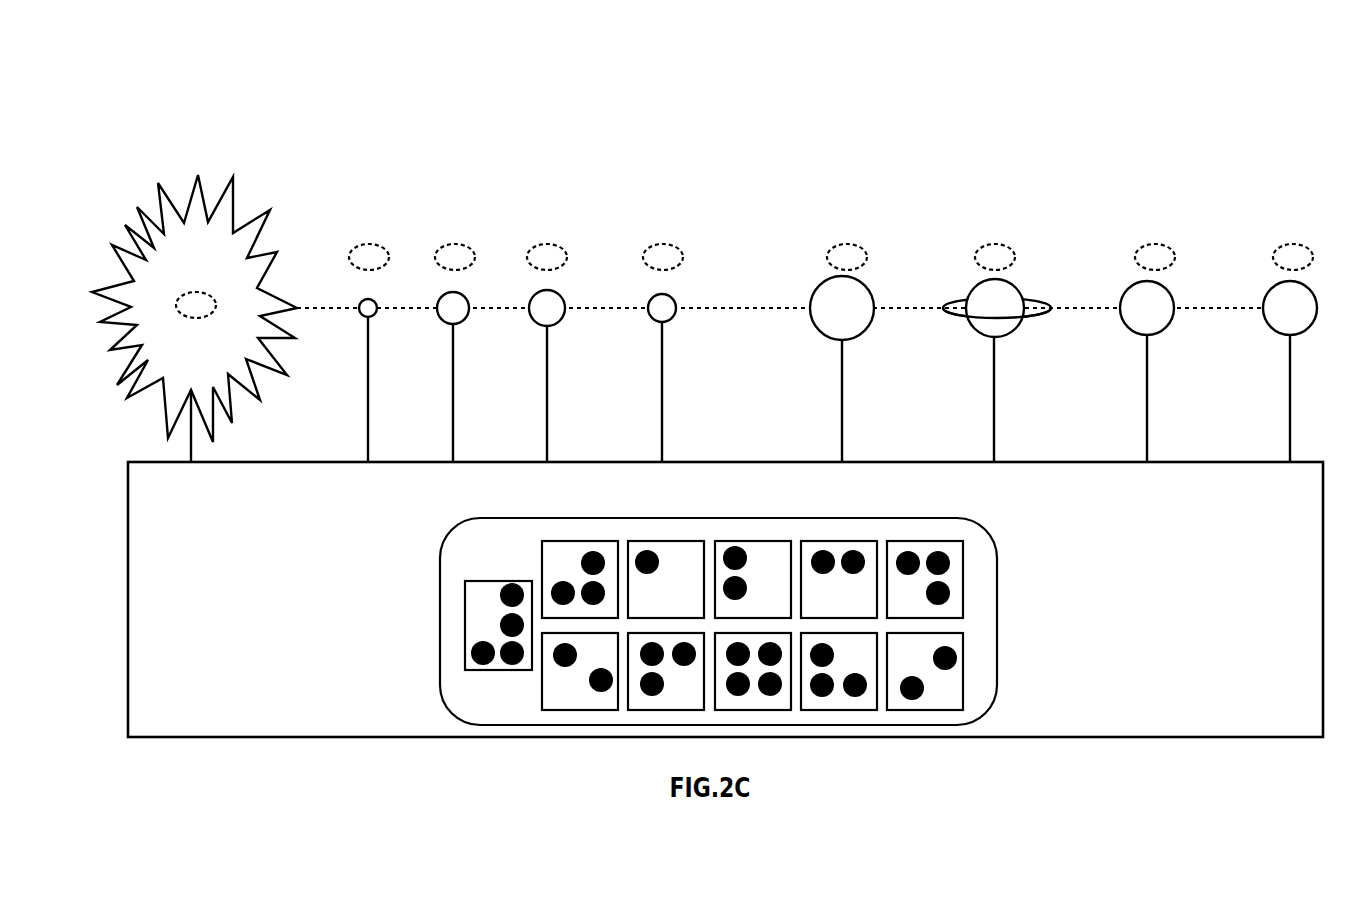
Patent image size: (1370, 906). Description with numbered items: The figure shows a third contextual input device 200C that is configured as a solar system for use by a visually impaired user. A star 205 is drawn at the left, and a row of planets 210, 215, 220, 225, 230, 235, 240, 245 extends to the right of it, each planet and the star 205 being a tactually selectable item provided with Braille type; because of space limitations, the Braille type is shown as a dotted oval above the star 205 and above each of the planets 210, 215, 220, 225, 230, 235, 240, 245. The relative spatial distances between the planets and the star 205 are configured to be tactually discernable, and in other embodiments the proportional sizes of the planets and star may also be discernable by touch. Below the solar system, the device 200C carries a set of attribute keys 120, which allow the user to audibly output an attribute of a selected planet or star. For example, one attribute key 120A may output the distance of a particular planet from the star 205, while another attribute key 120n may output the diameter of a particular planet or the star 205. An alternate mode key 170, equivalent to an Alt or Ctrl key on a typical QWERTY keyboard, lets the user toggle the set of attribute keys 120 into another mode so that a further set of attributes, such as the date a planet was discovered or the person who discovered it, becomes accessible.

The star 205 is at (204, 292).
The planet 210 is at (373, 244).
The planet 215 is at (459, 244).
The planet 220 is at (552, 244).
The planet 225 is at (666, 244).
The planet 230 is at (850, 244).
The planet 235 is at (999, 244).
The planet 240 is at (1159, 244).
The planet 245 is at (1297, 244).
The contextual input device 200C is at (204, 724).
The set of attribute keys 120 is at (517, 709).
The attribute key 120A is at (675, 540).
The attribute key 120n is at (965, 670).
The alternate mode key 170 is at (463, 627).